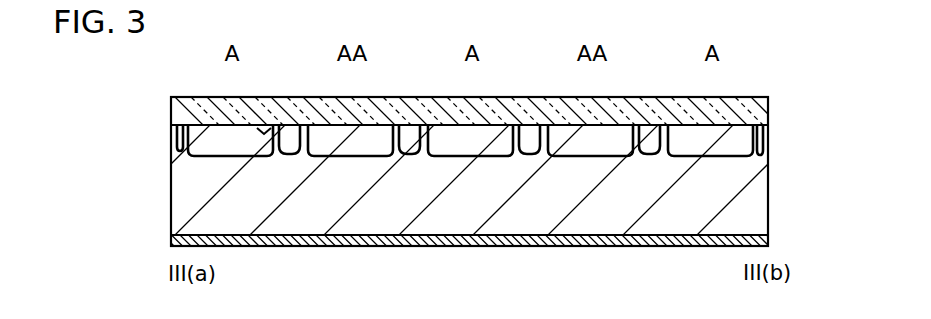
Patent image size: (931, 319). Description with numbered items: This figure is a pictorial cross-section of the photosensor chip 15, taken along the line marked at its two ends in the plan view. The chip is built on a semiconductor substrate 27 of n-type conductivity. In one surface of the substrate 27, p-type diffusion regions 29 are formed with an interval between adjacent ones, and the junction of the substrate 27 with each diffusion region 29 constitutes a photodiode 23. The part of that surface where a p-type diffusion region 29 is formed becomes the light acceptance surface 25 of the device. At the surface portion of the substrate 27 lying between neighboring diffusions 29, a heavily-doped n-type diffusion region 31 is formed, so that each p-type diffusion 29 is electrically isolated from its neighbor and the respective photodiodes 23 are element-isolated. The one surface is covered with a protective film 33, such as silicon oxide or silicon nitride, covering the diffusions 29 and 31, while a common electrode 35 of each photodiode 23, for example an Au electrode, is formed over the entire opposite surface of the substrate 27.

The photosensor chip 15 is at (776, 88).
The photodiode 23 is at (212, 158).
The light acceptance surface 25 is at (265, 130).
The semiconductor substrate 27 is at (759, 182).
The p-type diffusion region 29 is at (172, 145).
The heavily-doped n-type diffusion region 31 is at (289, 157).
The protective film 33 is at (768, 115).
The common electrode 35 is at (764, 238).